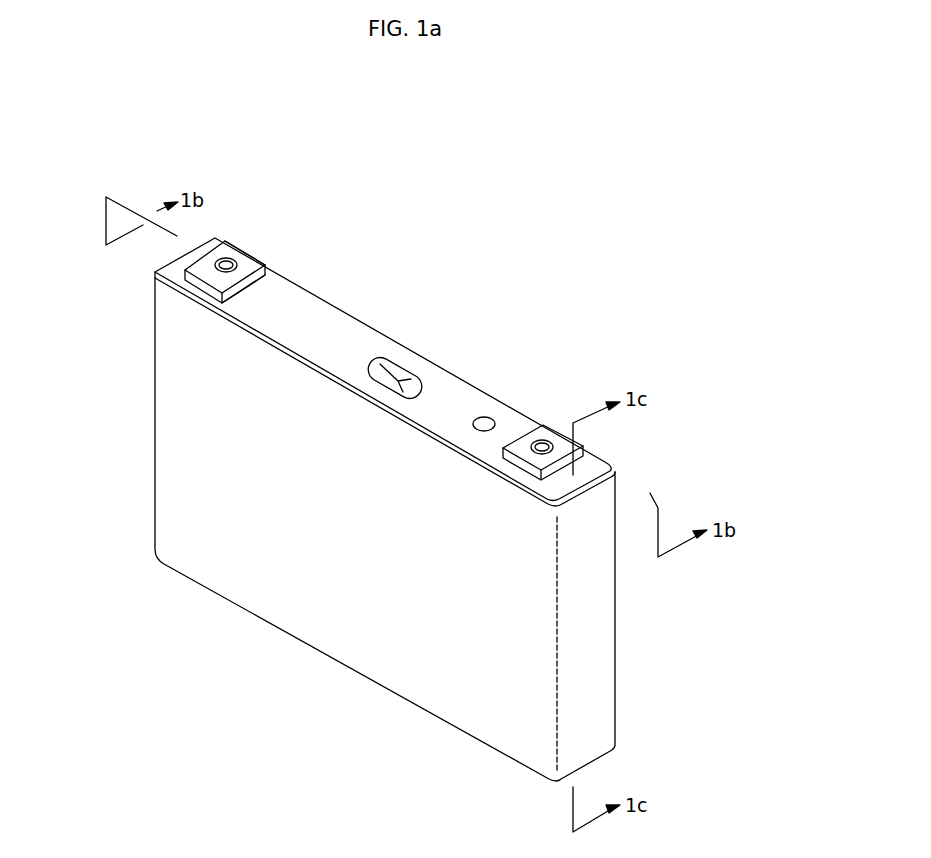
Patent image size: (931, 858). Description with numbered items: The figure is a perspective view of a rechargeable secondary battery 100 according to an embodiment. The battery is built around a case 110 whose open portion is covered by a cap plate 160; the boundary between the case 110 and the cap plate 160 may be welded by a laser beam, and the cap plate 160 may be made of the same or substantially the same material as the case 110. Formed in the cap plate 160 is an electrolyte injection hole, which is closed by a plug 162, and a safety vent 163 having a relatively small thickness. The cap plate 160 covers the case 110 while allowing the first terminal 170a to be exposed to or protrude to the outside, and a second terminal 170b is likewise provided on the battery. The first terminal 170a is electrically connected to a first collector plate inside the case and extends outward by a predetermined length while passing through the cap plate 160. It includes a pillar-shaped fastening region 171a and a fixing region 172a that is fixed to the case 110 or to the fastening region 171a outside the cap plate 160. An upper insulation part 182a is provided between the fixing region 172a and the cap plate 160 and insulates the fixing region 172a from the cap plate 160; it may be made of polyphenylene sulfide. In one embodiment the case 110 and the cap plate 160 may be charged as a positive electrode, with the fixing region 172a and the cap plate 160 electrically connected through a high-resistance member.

The rechargeable secondary battery 100 is at (441, 473).
The case 110 is at (622, 649).
The cap plate 160 is at (333, 316).
The plug 162 is at (486, 417).
The safety vent 163 is at (402, 369).
The first terminal 170a is at (261, 234).
The second terminal 170b is at (561, 418).
The fastening region 171a is at (222, 258).
The fixing region 172a is at (268, 248).
The upper insulation part 182a is at (248, 290).